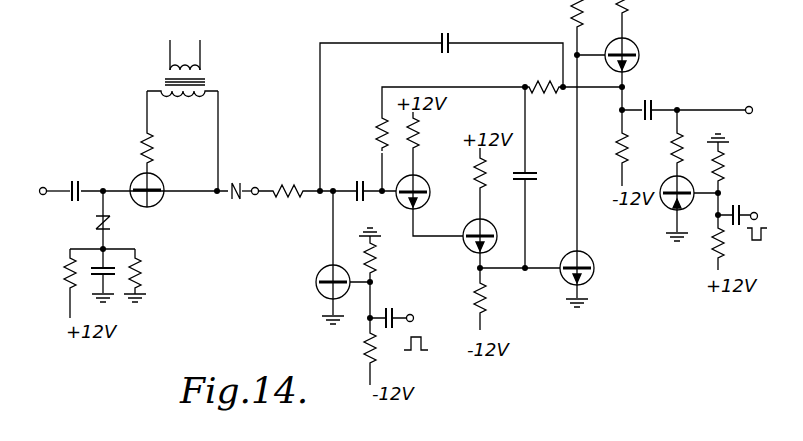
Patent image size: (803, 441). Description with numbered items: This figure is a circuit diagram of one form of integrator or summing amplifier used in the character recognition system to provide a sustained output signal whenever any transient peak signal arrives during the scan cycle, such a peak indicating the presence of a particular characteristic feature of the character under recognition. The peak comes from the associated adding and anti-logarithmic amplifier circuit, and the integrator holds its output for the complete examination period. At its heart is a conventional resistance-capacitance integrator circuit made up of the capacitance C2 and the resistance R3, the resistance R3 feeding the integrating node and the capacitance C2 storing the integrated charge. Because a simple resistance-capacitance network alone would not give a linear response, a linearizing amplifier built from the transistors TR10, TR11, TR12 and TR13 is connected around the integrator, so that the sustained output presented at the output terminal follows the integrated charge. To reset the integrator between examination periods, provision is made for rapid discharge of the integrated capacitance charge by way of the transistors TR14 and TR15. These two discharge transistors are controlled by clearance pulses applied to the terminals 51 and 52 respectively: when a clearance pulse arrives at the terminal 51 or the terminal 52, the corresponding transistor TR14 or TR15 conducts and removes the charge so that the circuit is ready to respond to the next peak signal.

The capacitance C2 is at (460, 33).
The resistance R3 is at (288, 175).
The transistor TR10 is at (430, 180).
The transistor TR11 is at (460, 244).
The transistor TR12 is at (601, 274).
The transistor TR13 is at (646, 51).
The transistor TR14 is at (317, 272).
The transistor TR15 is at (663, 206).
The terminal 51 is at (422, 302).
The terminal 52 is at (763, 202).